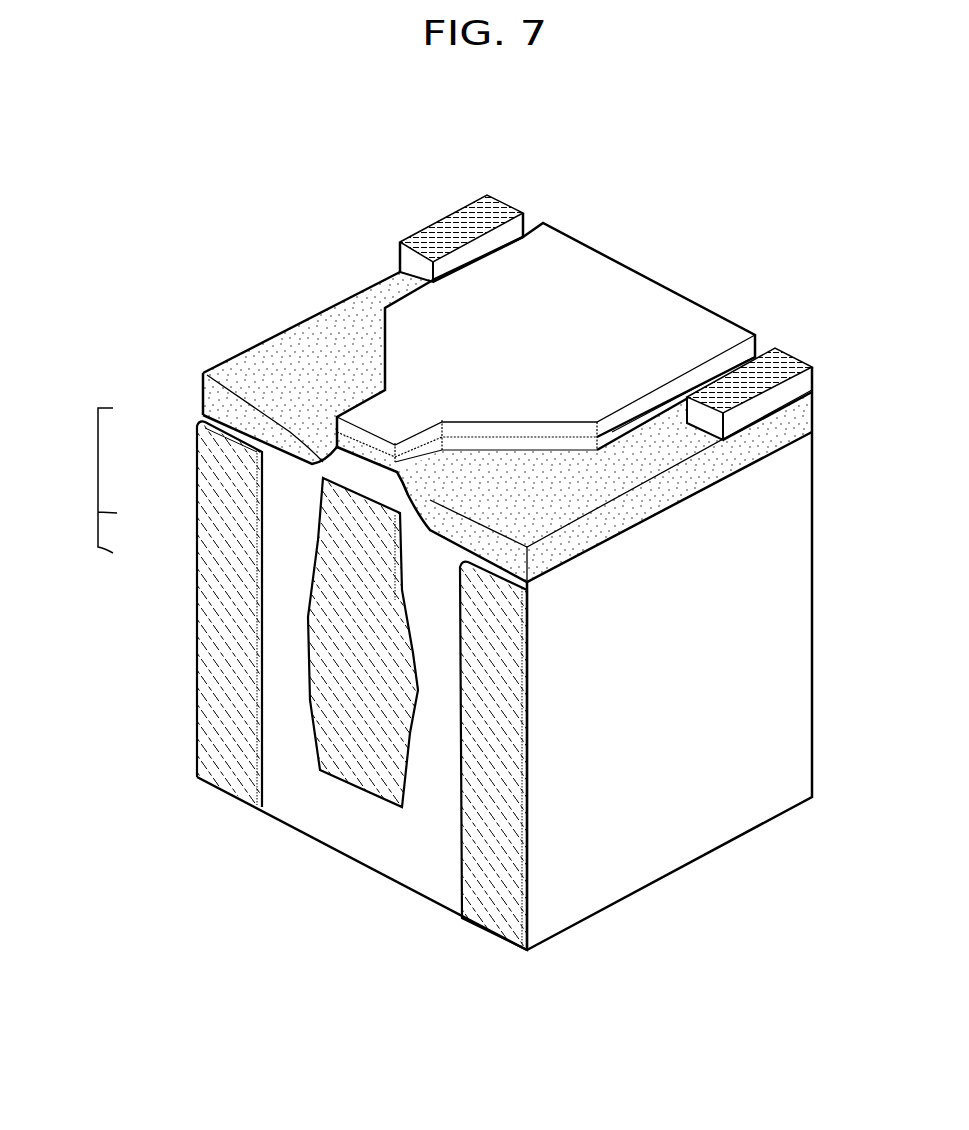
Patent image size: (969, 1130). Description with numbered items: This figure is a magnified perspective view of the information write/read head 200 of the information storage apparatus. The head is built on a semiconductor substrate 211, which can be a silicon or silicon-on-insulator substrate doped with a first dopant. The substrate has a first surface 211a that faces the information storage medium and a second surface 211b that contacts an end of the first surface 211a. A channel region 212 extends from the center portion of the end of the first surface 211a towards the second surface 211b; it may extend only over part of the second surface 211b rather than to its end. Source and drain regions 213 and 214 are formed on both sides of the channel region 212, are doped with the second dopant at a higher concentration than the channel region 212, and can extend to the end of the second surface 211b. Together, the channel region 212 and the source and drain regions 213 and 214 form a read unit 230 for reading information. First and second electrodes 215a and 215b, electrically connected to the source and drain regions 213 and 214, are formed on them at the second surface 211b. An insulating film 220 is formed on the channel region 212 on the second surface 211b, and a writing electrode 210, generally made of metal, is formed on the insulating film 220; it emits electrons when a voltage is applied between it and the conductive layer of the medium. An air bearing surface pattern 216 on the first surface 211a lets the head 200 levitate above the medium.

The information write/read head 200 is at (245, 229).
The writing electrode 210 is at (607, 267).
The semiconductor substrate 211 is at (683, 848).
The first surface 211a is at (432, 888).
The second surface 211b is at (295, 348).
The channel region 212 is at (337, 456).
The source region 213 is at (205, 400).
The drain region 214 is at (450, 512).
The first electrode 215a is at (503, 203).
The second electrode 215b is at (788, 352).
The air bearing surface pattern 216 is at (463, 863).
The insulating film 220 is at (657, 413).
The read unit 230 is at (98, 477).